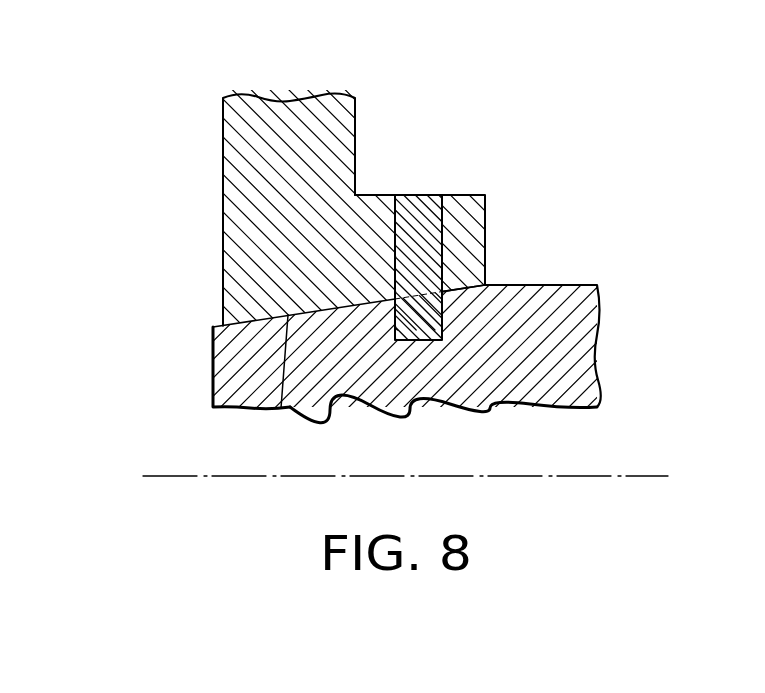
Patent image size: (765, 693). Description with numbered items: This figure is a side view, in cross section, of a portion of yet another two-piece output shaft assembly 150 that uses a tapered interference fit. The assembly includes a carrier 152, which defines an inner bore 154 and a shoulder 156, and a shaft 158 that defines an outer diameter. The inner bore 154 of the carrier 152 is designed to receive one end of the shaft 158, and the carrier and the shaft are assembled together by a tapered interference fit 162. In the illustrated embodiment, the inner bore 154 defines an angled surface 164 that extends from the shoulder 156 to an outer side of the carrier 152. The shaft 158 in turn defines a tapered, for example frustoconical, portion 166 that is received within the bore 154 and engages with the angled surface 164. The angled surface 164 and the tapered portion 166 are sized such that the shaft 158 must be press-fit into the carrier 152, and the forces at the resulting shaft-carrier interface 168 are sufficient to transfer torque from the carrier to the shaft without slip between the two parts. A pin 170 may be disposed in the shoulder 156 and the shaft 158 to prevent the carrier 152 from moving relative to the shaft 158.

The two-piece output shaft assembly 150 is at (181, 58).
The carrier 152 is at (222, 160).
The inner bore 154 is at (262, 320).
The shoulder 156 is at (462, 195).
The shaft 158 is at (568, 285).
The tapered interference fit 162 is at (196, 296).
The angled surface 164 is at (462, 285).
The tapered portion 166 is at (213, 372).
The shaft-carrier interface 168 is at (281, 408).
The pin 170 is at (420, 195).